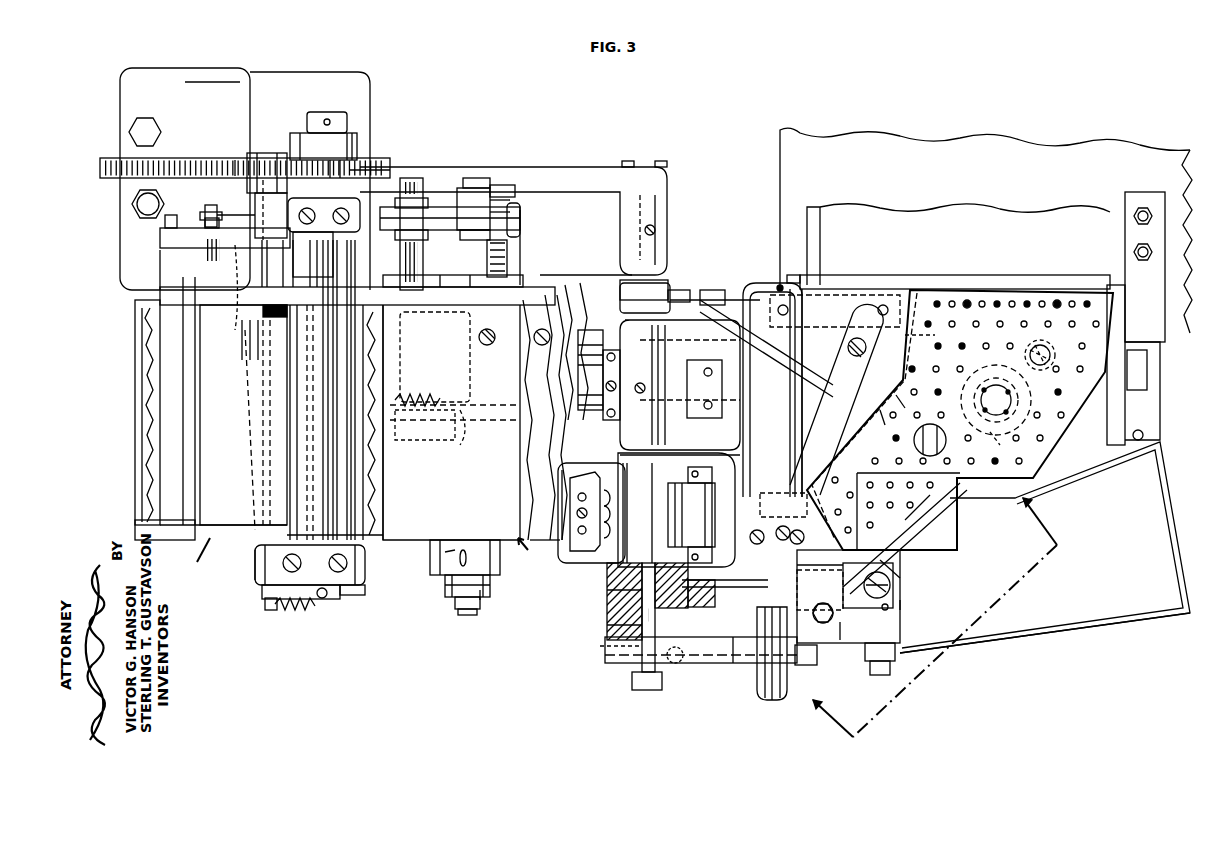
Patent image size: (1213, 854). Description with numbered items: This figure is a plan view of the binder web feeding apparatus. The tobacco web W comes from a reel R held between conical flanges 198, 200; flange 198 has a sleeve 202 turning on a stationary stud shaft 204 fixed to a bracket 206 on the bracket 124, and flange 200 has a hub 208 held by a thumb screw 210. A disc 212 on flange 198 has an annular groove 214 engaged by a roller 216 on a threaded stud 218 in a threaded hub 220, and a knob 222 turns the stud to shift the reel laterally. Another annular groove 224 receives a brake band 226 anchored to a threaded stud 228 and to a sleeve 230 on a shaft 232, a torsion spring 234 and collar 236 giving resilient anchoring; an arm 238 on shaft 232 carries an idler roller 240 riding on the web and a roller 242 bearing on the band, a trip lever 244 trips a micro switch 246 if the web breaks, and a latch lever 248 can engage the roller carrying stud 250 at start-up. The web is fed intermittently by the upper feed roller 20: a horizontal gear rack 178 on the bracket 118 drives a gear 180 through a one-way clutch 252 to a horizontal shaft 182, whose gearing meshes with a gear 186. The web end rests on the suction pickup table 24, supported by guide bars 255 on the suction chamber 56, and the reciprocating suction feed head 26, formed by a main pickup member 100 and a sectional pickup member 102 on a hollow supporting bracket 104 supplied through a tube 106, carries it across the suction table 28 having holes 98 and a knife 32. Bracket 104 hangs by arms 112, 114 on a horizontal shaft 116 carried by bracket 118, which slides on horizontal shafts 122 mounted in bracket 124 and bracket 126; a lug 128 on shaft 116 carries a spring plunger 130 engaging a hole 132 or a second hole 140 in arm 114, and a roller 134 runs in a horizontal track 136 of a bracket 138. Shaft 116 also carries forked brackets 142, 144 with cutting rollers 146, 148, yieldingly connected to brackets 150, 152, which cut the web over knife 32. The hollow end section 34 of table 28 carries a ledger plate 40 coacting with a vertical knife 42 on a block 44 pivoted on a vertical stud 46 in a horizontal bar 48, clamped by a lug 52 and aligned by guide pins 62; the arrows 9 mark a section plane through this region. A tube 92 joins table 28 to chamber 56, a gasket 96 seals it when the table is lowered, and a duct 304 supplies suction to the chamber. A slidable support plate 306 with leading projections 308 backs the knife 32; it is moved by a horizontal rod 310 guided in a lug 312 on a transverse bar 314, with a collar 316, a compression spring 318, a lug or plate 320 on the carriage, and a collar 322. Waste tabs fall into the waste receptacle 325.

The upper web feed roller 20 is at (300, 497).
The suction pickup table 24 is at (562, 545).
The reciprocating suction feed head 26 is at (914, 440).
The suction table 28 is at (1030, 293).
The knife 32 is at (885, 422).
The end section 34 is at (918, 512).
The ledger plate 40 is at (912, 525).
The vertical knife 42 is at (900, 545).
The block 44 is at (895, 578).
The vertical stud 46 is at (892, 592).
The horizontal bar 48 is at (850, 598).
The lug 52 is at (842, 630).
The suction chamber 56 is at (1082, 458).
The guide pins 62 is at (845, 555).
The tube 92 is at (975, 385).
The gasket 96 is at (990, 445).
The holes 98 is at (968, 300).
The main pickup member 100 is at (915, 290).
The sectional pickup member 102 is at (820, 587).
The supporting bracket 104 is at (845, 320).
The tube 106 is at (765, 700).
The arm 112 is at (678, 292).
The arm 114 is at (745, 600).
The horizontal shaft 116 is at (620, 284).
The bracket 118 is at (620, 230).
The horizontal shafts 122 is at (625, 345).
The bracket 124 is at (176, 78).
The bracket 126 is at (1160, 396).
The lug 128 is at (607, 630).
The spring plunger 130 is at (607, 615).
The hole 132 is at (607, 596).
The roller 134 is at (600, 650).
The horizontal track 136 is at (675, 665).
The bracket 138 is at (705, 663).
The second hole 140 is at (701, 597).
The forked bracket 142 is at (745, 285).
The forked bracket 144 is at (585, 562).
The cutting roller 146 is at (795, 305).
The cutting roller 148 is at (720, 572).
The bracket 150 is at (615, 435).
The bracket 152 is at (630, 480).
The horizontal gear rack 178 is at (100, 166).
The gear 180 is at (355, 160).
The horizontal shaft 182 is at (315, 112).
The gear 186 is at (290, 255).
The conical flange 198 is at (408, 320).
The conical flange 200 is at (430, 555).
The sleeve 202 is at (455, 605).
The stationary stud shaft 204 is at (470, 268).
The bracket 206 is at (465, 180).
The hub 208 is at (448, 578).
The thumb screw 210 is at (460, 560).
The disc 212 is at (430, 285).
The annular groove 214 is at (453, 290).
The roller 216 is at (520, 285).
The threaded stud 218 is at (512, 200).
The threaded hub 220 is at (512, 212).
The knob 222 is at (508, 186).
The annular groove 224 is at (490, 345).
The brake band 226 is at (243, 338).
The threaded stud 228 is at (415, 180).
The sleeve 230 is at (250, 350).
The shaft 232 is at (262, 547).
The torsion spring 234 is at (257, 365).
The collar 236 is at (243, 390).
The arm 238 is at (160, 254).
The idler roller 240 is at (135, 298).
The roller 242 is at (238, 326).
The trip lever 244 is at (240, 160).
The micro switch 246 is at (283, 160).
The latch lever 248 is at (252, 200).
The roller carrying stud 250 is at (222, 214).
The one-way clutch 252 is at (330, 128).
The guide bars 255 is at (855, 283).
The duct 304 is at (1046, 345).
The support plate 306 is at (900, 400).
The leading projections 308 is at (933, 337).
The horizontal rod 310 is at (705, 425).
The lug 312 is at (425, 426).
The transverse bar 314 is at (362, 596).
The collar 316 is at (448, 440).
The compression spring 318 is at (440, 400).
The lug or plate 320 is at (463, 445).
The collar 322 is at (735, 412).
The waste receptacle 325 is at (1040, 633).
The tobacco web W is at (196, 559).
The reel R is at (524, 565).
The section line 9- 9 is at (926, 616).